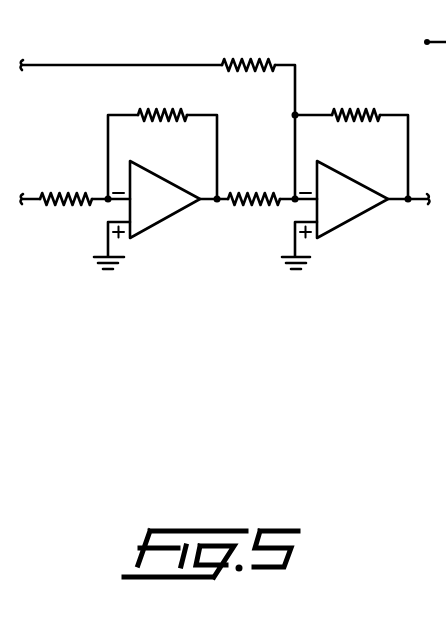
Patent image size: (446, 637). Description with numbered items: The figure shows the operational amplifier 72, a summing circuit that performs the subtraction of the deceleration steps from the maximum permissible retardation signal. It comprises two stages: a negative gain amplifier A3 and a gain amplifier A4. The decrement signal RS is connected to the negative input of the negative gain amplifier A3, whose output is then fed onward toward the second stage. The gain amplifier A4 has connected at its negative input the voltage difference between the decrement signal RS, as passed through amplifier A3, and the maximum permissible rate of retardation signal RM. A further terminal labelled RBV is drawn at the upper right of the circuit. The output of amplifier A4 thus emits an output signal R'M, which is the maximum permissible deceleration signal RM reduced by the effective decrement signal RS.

The operational amplifier 72 is at (188, 43).
The decrement signal RS is at (160, 185).
The maximum permissible rate of retardation signal RM is at (332, 154).
The output signal R'M is at (408, 215).
The bias voltage resistor terminal RBV is at (409, 39).
The negative gain amplifier A3 is at (156, 205).
The gain amplifier A4 is at (344, 205).